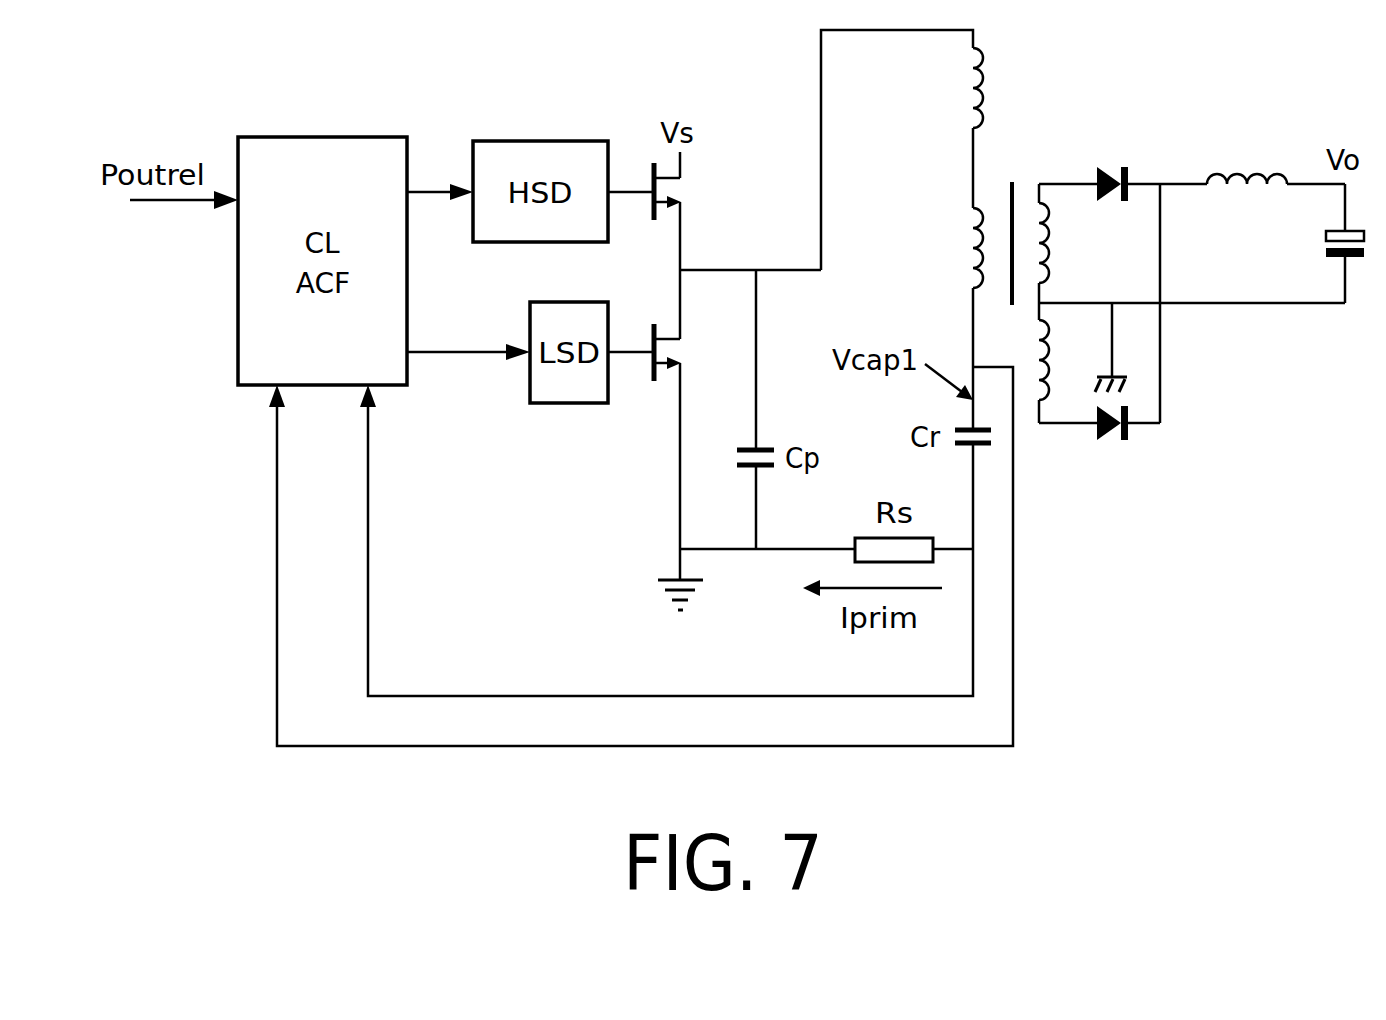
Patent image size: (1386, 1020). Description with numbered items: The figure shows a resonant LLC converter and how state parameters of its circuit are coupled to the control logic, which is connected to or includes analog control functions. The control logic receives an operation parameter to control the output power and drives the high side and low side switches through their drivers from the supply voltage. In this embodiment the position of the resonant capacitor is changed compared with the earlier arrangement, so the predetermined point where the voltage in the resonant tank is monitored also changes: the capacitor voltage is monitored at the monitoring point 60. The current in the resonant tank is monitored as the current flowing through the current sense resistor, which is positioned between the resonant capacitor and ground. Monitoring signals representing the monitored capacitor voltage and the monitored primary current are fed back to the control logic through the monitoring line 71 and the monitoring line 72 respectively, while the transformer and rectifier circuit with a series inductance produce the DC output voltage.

The monitoring point 60 is at (973, 367).
The monitoring line 71 is at (1013, 641).
The monitoring line 72 is at (465, 696).